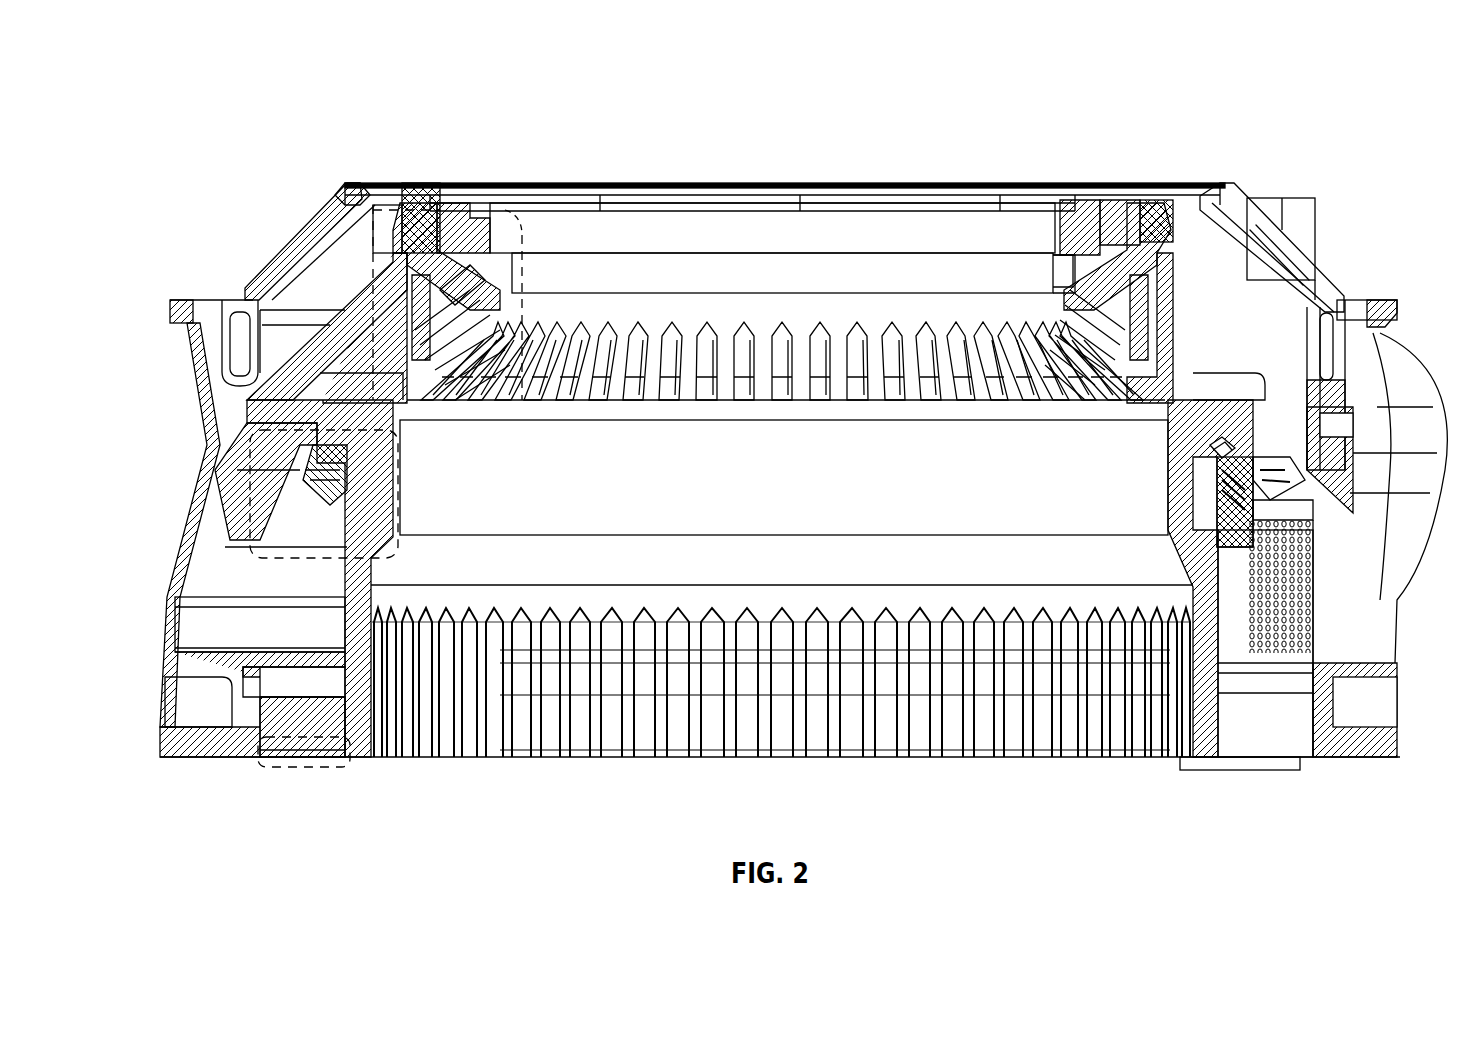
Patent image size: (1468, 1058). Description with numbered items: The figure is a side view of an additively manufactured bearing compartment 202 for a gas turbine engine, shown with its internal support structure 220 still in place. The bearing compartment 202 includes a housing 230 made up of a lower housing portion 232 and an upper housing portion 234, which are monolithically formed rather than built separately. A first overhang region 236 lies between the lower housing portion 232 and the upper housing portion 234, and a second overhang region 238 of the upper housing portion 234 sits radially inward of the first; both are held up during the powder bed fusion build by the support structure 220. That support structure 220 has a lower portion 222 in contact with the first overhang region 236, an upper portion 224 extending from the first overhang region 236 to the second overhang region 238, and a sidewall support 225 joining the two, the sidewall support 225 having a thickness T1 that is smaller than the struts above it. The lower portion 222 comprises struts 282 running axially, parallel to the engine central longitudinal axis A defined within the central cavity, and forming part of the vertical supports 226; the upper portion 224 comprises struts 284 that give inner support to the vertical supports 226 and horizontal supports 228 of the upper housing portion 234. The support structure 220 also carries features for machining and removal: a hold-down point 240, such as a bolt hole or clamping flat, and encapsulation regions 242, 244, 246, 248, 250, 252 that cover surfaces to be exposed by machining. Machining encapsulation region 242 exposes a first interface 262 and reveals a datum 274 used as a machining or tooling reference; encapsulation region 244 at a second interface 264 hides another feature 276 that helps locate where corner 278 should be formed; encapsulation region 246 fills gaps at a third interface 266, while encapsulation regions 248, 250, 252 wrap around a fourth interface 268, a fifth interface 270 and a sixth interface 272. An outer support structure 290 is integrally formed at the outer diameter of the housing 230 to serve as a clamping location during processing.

The bearing compartment 202 is at (266, 118).
The support structure 220 is at (505, 762).
The lower portion 222 is at (717, 573).
The upper portion 224 is at (833, 270).
The sidewall support 225 is at (802, 440).
The vertical supports 226 is at (400, 328).
The horizontal supports 228 is at (1167, 217).
The housing 230 is at (215, 520).
The lower housing portion 232 is at (173, 610).
The upper housing portion 234 is at (253, 300).
The first overhang region 236 is at (240, 485).
The second overhang region 238 is at (372, 255).
The hold-down point 240 is at (287, 768).
The encapsulation region 242 is at (1168, 575).
The encapsulation region 244 is at (233, 312).
The encapsulation region 246 is at (1117, 212).
The encapsulation region 248 is at (1090, 228).
The encapsulation region 250 is at (352, 198).
The encapsulation region 252 is at (1333, 680).
The first interface 262 is at (385, 520).
The second interface 264 is at (300, 445).
The third interface 266 is at (463, 213).
The fourth interface 268 is at (522, 250).
The fifth interface 270 is at (447, 203).
The sixth interface 272 is at (1380, 348).
The datum 274 is at (1213, 452).
The feature 276 is at (1215, 440).
The corner 278 is at (1262, 455).
The struts 282 is at (723, 705).
The struts 284 is at (756, 337).
The outer support structure 290 is at (173, 708).
The engine central longitudinal axis A is at (782, 270).
The thickness T1 is at (1185, 434).